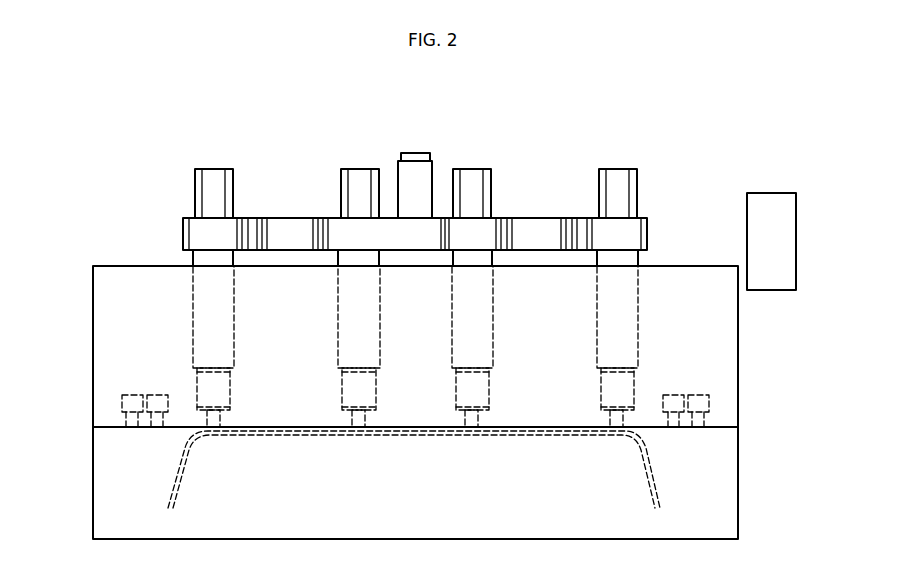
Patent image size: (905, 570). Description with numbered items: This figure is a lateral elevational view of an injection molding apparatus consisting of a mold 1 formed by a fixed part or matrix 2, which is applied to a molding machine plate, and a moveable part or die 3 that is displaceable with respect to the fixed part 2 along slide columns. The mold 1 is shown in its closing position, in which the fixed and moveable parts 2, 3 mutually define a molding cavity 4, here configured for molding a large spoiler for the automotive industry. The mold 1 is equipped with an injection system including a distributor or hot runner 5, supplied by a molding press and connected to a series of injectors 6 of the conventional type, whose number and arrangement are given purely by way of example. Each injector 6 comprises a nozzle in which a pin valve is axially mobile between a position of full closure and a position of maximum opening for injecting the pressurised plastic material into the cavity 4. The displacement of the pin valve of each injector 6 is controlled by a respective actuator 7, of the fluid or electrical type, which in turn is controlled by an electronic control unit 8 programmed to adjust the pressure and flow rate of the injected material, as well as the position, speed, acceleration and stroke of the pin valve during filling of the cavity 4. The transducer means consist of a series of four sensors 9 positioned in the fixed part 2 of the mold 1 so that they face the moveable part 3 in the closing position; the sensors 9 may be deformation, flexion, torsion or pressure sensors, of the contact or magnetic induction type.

The mold 1 is at (757, 111).
The fixed part or matrix 2 is at (113, 265).
The moveable part or die 3 is at (103, 488).
The molding cavity 4 is at (327, 435).
The distributor or hot runner 5 is at (647, 238).
The injector 6 is at (338, 333).
The actuator 7 is at (341, 184).
The electronic control unit 8 is at (770, 203).
The sensor 9 is at (157, 395).